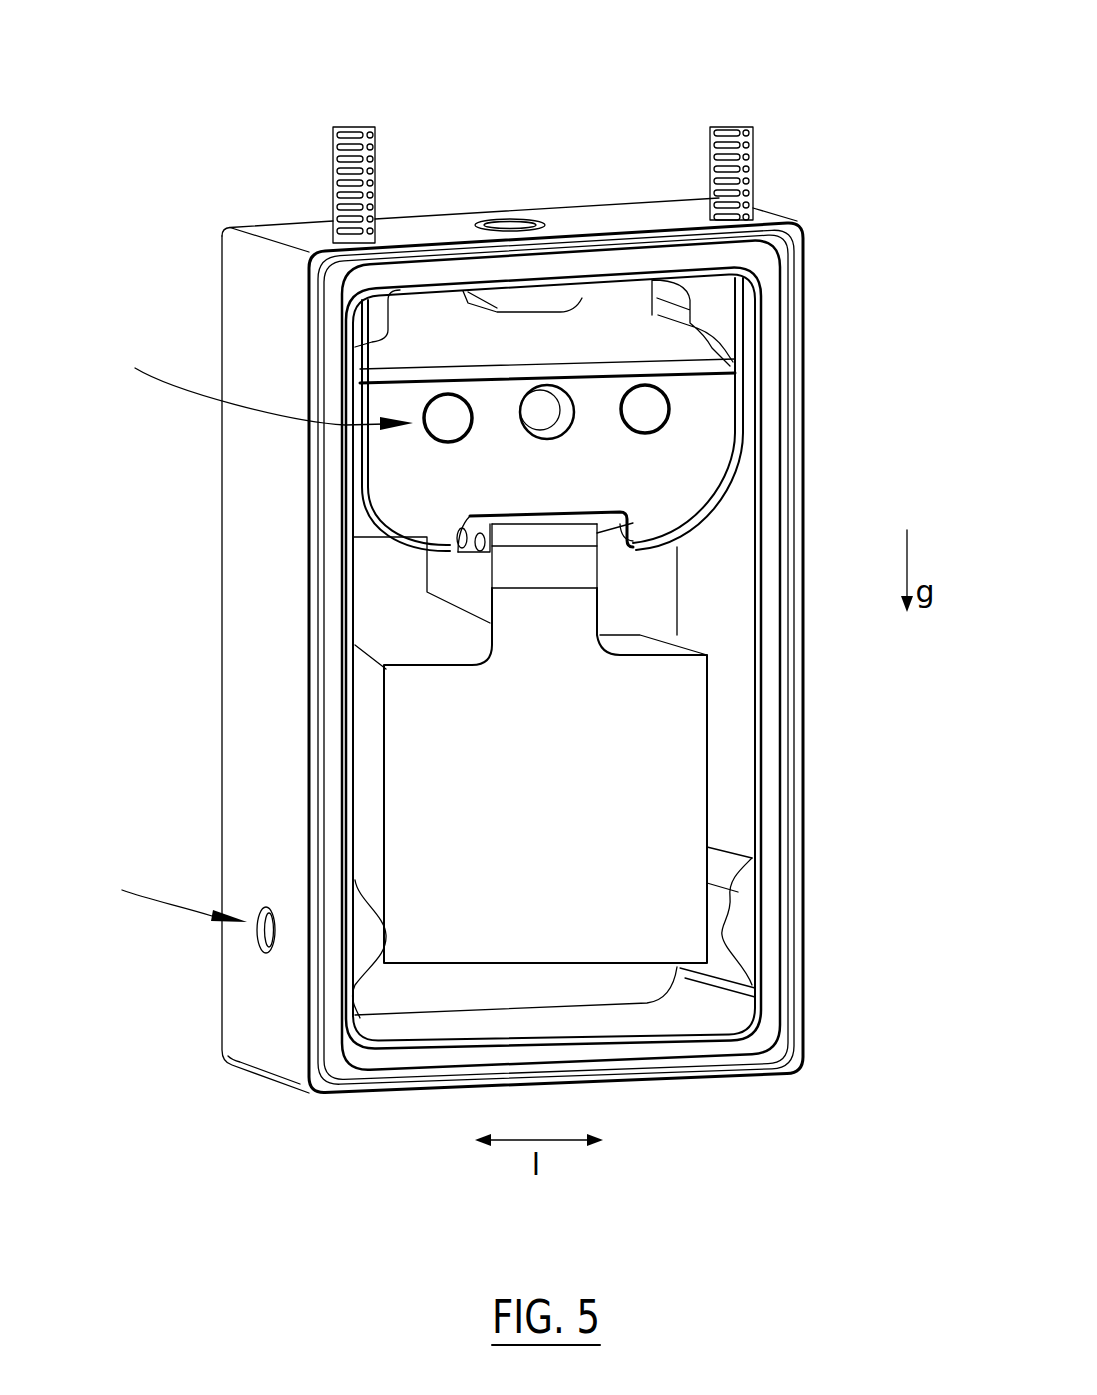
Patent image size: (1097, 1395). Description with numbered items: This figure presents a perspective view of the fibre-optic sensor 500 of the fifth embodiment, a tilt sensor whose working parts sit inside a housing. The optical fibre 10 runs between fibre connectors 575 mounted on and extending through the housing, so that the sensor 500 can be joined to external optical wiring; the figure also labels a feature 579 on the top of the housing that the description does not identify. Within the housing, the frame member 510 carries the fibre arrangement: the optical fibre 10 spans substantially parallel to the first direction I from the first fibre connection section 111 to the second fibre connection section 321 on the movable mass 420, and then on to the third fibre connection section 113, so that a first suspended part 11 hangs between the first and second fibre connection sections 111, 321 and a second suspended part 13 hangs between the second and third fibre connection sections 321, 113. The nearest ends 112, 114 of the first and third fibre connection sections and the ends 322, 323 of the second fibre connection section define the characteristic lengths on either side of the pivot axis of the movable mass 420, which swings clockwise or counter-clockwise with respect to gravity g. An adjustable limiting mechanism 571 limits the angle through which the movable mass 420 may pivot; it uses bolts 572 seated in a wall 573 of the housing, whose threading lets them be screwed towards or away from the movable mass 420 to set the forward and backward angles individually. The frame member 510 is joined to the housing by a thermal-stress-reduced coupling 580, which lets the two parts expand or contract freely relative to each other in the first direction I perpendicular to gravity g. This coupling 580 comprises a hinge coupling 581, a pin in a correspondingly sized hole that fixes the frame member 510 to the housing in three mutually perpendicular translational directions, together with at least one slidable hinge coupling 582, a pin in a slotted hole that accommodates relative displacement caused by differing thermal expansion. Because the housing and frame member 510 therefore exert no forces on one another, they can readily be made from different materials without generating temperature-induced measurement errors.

The fibre-optic sensor 500 is at (172, 211).
The fibre connectors 575 is at (357, 142).
The opening 579 is at (515, 228).
The slidable hinge coupling 582 is at (637, 392).
The optical fibre 10 is at (733, 318).
The thermal-stress-reduced coupling 580 is at (250, 382).
The frame member 510 is at (703, 402).
The first fibre connection section 111 is at (736, 455).
The third fibre connection section 113 is at (373, 512).
The end of third fibre connection section 114 is at (457, 545).
The end of first fibre connection section 112 is at (638, 545).
The hinge coupling 581 is at (548, 428).
The second suspended part 13 is at (471, 553).
The first suspended part 11 is at (613, 538).
The second fibre connection section 321 is at (545, 583).
The end of second fibre connection section 322 is at (600, 545).
The end of second fibre connection section 323 is at (500, 553).
The movable mass 420 is at (693, 838).
The wall of the housing 573 is at (780, 732).
The adjustable limiting mechanism 571 is at (160, 891).
The bolts 572 is at (263, 946).